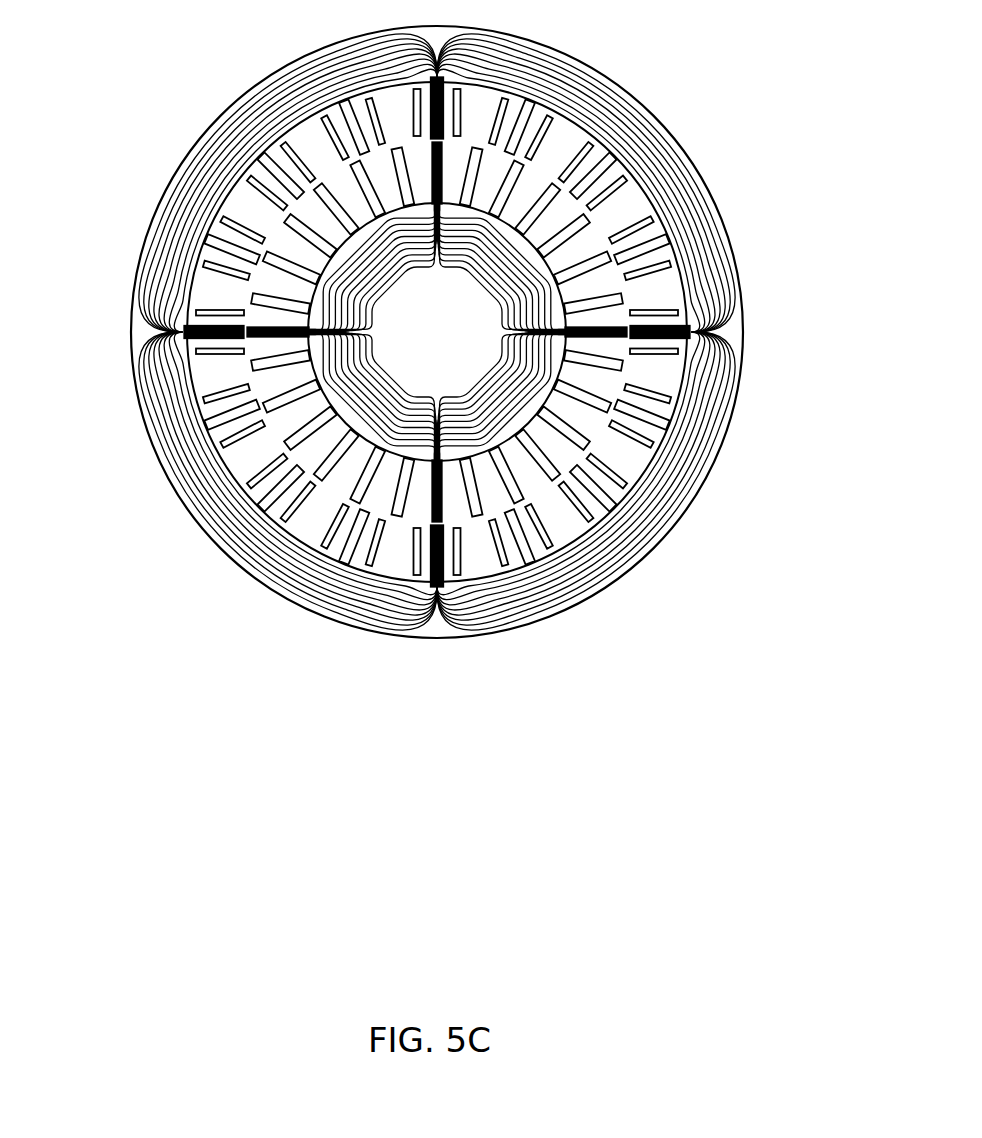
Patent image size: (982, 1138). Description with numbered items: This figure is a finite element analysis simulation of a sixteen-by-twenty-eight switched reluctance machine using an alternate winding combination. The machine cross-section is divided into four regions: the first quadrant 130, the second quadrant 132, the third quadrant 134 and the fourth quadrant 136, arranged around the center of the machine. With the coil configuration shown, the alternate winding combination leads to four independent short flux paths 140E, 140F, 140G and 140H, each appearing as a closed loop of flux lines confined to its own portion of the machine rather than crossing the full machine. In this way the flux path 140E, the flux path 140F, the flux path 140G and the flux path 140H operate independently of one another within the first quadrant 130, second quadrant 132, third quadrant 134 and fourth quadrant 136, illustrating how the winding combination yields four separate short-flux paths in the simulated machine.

The first quadrant 130 is at (668, 130).
The second quadrant 132 is at (665, 528).
The third quadrant 134 is at (238, 512).
The fourth quadrant 136 is at (205, 130).
The independent flux path 140E is at (303, 78).
The independent flux path 140F is at (572, 78).
The independent flux path 140G is at (708, 438).
The independent flux path 140H is at (162, 440).